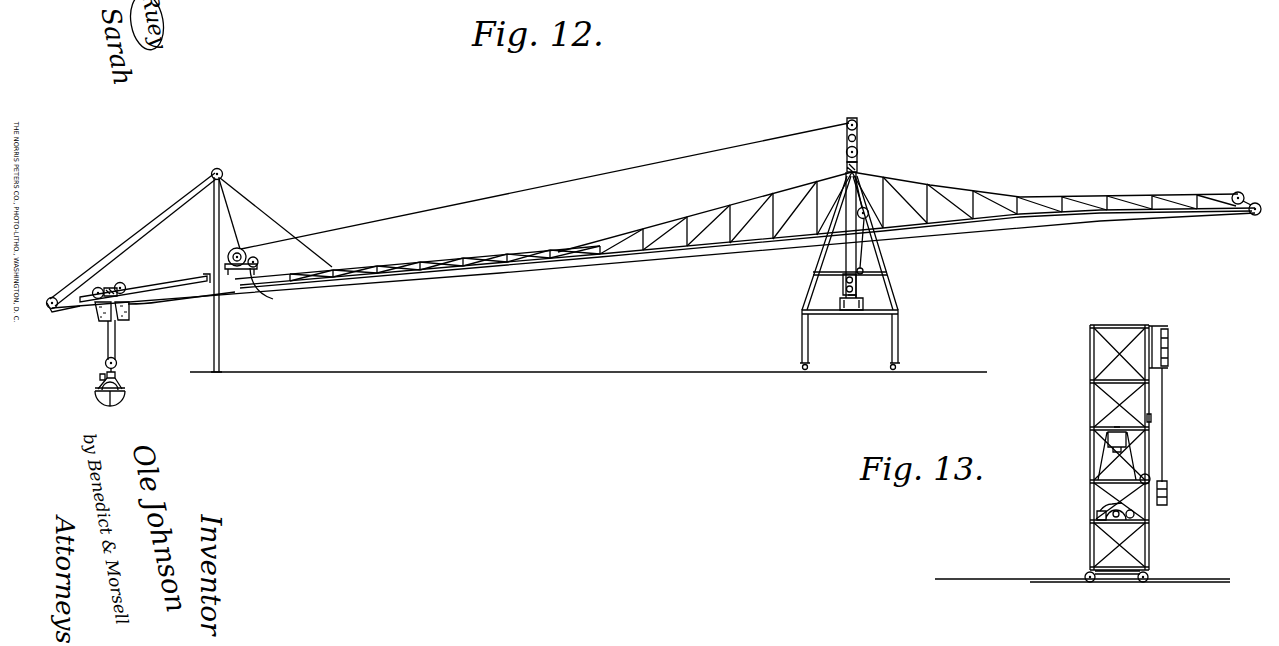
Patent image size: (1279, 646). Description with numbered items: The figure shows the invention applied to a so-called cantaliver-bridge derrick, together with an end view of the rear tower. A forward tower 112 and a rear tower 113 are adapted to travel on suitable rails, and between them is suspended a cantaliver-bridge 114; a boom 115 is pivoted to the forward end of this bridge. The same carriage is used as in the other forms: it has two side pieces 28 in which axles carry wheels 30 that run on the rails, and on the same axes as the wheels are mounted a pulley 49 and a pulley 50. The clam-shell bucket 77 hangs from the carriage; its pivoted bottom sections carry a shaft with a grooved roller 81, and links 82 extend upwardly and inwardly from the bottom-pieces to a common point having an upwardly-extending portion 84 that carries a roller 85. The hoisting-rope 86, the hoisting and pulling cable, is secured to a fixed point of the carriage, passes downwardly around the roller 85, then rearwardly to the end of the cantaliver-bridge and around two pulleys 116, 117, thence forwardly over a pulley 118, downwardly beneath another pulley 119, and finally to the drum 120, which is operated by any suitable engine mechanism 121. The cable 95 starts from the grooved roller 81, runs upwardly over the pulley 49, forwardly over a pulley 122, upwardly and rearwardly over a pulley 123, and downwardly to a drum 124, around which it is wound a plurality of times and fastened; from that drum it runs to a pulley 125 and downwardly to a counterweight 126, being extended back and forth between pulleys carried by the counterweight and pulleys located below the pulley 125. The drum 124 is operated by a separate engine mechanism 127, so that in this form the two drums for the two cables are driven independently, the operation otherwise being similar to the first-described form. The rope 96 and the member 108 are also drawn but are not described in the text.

In FIG. 12, the side pieces of the carriage 28 is at (128, 313).
In FIG. 12, the wheels 30 is at (101, 288).
In FIG. 12, the pulley 49 is at (95, 317).
In FIG. 12, the pulley 50 is at (153, 302).
In FIG. 12, the clam-shell bucket 77 is at (127, 398).
In FIG. 12, the grooved roller 81 is at (124, 390).
In FIG. 12, the links 82 is at (120, 386).
In FIG. 12, the upwardly-extending portion 84 is at (116, 376).
In FIG. 12, the roller 85 is at (115, 361).
In FIG. 12, the hoisting-rope 86 is at (356, 284).
In FIG. 12, the cable 95 is at (137, 235).
In FIG. 12, the hoisting rope 96 is at (105, 370).
In FIG. 12, the brace 108 is at (166, 222).
In FIG. 12, the forward tower 112 is at (219, 326).
In FIG. 12, the rear tower 113 is at (810, 274).
In FIG. 12, the cantaliver-bridge 114 is at (545, 264).
In FIG. 12, the boom 115 is at (184, 280).
In FIG. 12, the pulley 116 is at (1253, 216).
In FIG. 12, the pulley 117 is at (1238, 191).
In FIG. 12, the pulley 118 is at (866, 208).
In FIG. 13, the pulley 118 is at (1152, 418).
In FIG. 12, the pulley 119 is at (865, 272).
In FIG. 13, the pulley 119 is at (1150, 477).
In FIG. 12, the drum 120 is at (857, 312).
In FIG. 13, the drum 120 is at (1134, 513).
In FIG. 13, the engine mechanism 121 is at (1110, 518).
In FIG. 12, the pulley 122 is at (53, 297).
In FIG. 12, the pulley 123 is at (272, 208).
In FIG. 12, the drum 124 is at (243, 253).
In FIG. 12, the pulley 125 is at (858, 121).
In FIG. 13, the pulley 125 is at (1168, 330).
In FIG. 12, the counterweight 126 is at (841, 284).
In FIG. 13, the counterweight 126 is at (1168, 492).
In FIG. 12, the engine mechanism 127 is at (280, 288).